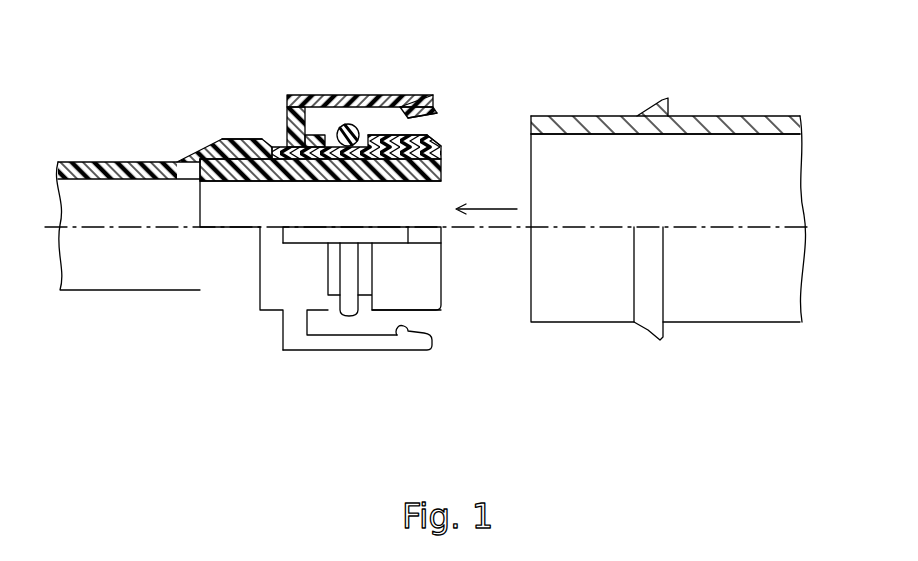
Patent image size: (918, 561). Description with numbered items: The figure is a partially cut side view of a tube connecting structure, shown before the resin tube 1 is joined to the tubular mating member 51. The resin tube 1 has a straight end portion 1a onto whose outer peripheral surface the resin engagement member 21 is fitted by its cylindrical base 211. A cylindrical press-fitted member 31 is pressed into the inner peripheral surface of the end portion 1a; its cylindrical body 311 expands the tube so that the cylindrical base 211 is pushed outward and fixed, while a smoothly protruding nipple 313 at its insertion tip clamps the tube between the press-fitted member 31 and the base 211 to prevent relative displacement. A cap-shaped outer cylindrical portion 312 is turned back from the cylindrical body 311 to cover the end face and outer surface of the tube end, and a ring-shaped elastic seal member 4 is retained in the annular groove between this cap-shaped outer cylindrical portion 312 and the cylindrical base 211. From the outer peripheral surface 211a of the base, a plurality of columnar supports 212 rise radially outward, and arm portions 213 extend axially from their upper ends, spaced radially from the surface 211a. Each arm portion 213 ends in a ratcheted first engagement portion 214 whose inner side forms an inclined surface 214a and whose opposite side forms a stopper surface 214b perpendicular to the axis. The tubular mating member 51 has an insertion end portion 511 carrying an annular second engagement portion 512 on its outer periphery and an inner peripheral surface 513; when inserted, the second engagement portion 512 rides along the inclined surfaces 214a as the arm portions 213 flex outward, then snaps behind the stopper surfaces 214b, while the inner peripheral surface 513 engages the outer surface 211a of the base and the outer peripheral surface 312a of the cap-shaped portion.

The resin tube 1 is at (83, 160).
The end portion of the resin tube 1a is at (441, 156).
The engagement member 21 is at (342, 221).
The cylindrical base 211 is at (258, 138).
The outer peripheral surface of the cylindrical base 211a is at (312, 125).
The supports 212 is at (283, 100).
The arm portions 213 is at (338, 128).
The first engagement portion 214 is at (422, 107).
The inclined surface 214a is at (424, 115).
The stopper surface 214b is at (400, 107).
The press-fitted member 31 is at (364, 176).
The cylindrical body 311 is at (397, 183).
The cap-shaped outer cylindrical portion 312 is at (394, 128).
The outer peripheral surface of the cap-shaped outer cylindrical portion 312a is at (441, 128).
The nipple 313 is at (238, 181).
The ring-shaped elastic seal member 4 is at (349, 123).
The tubular mating member 51 is at (668, 220).
The insertion end portion 511 is at (583, 127).
The second engagement portion 512 is at (665, 98).
The inner peripheral surface of the insertion end portion 513 is at (618, 135).